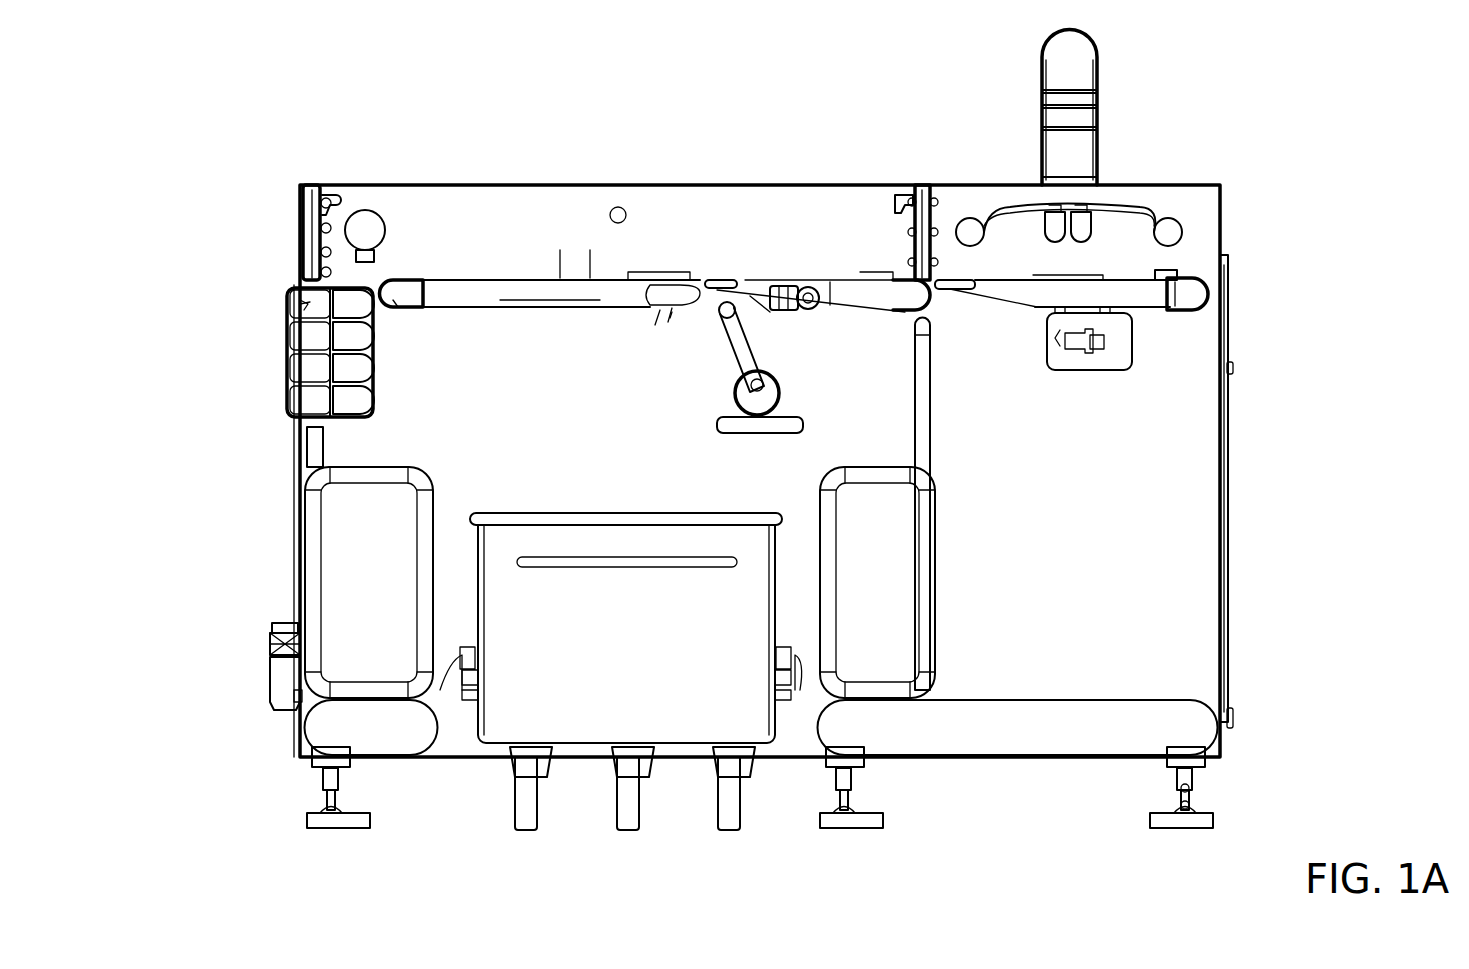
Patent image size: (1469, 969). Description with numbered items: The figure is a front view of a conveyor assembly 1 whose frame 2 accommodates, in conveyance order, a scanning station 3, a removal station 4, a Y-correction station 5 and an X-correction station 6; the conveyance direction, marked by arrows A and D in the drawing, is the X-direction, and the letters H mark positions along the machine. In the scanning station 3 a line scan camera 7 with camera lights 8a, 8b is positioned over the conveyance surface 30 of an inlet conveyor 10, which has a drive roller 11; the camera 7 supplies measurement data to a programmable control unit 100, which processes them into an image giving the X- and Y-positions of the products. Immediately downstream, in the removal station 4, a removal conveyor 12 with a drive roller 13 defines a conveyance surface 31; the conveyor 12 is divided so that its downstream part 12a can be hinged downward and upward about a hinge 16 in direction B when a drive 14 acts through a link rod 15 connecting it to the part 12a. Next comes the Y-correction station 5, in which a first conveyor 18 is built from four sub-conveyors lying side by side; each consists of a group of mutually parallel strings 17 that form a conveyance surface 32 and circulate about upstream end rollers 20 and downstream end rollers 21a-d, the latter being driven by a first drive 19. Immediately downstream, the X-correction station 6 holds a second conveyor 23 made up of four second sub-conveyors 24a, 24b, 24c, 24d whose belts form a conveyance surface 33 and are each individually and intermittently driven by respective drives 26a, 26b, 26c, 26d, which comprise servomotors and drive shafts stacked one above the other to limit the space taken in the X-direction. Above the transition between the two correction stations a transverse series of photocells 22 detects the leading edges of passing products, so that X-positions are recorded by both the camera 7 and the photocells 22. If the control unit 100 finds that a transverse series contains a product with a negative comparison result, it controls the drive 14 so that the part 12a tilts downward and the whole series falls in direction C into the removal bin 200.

The conveyor assembly 1 is at (1275, 185).
The frame 2 is at (1232, 560).
The scanning station 3 is at (1127, 160).
The removal station 4 is at (745, 166).
The Y-correction station 5 is at (497, 166).
The X-correction station 6 is at (328, 160).
The line scan camera 7 is at (1069, 108).
The camera light 8a is at (1170, 225).
The camera light 8b is at (972, 225).
The inlet conveyor 10 is at (998, 300).
The drive roller 11 is at (1183, 298).
The removal conveyor 12 is at (803, 287).
The downstream part 12a is at (750, 296).
The drive roller 13 is at (903, 330).
The drive 14 is at (776, 398).
The link rod 15 is at (737, 346).
The hinge 16 is at (836, 305).
The strings 17 is at (598, 278).
The first conveyor 18 is at (547, 300).
The first drive 19 is at (428, 300).
The upstream end rollers 20 is at (672, 312).
The downstream end rollers 21a-d is at (402, 300).
The photocells 22 is at (382, 235).
The second conveyor 23 is at (266, 294).
The second sub-conveyor 24a is at (293, 303).
The second sub-conveyor 24b is at (293, 333).
The second sub-conveyor 24c is at (293, 363).
The second sub-conveyor 24d is at (293, 400).
The drive 26a is at (372, 305).
The drive 26b is at (373, 334).
The drive 26c is at (378, 364).
The drive 26d is at (380, 390).
The conveyance surface 30 is at (1000, 278).
The conveyance surface 31 is at (838, 278).
The conveyance surface 32 is at (570, 278).
The conveyance surface 33 is at (300, 278).
The programmable control unit 100 is at (662, 185).
The removal bin 200 is at (652, 652).
The direction A is at (1347, 278).
The direction B is at (775, 348).
The direction C is at (690, 378).
The direction D is at (205, 272).
The handle position H is at (292, 278).